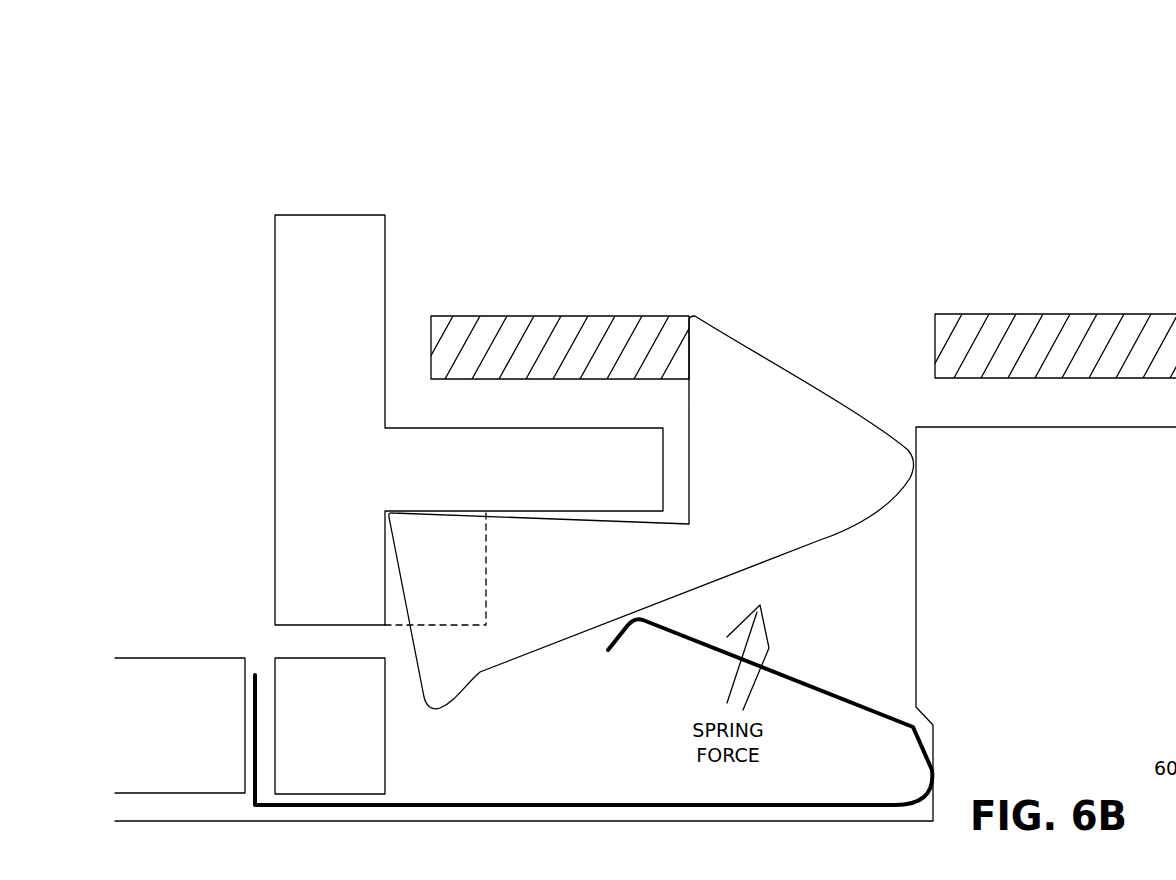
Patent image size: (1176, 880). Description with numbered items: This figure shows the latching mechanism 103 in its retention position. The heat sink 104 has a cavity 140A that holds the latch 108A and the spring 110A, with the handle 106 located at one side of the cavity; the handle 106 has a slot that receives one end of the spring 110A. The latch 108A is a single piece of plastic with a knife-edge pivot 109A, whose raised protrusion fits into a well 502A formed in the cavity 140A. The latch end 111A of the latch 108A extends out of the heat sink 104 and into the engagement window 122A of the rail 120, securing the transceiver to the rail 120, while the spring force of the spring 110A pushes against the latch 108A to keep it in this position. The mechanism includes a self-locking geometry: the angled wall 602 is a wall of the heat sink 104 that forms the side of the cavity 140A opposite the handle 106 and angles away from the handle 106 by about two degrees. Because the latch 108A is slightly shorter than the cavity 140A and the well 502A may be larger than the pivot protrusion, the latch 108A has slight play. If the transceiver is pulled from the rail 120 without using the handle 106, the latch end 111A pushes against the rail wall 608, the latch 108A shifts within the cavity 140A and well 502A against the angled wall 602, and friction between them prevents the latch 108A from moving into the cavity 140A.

The latching mechanism 103 is at (142, 252).
The heat sink 104 is at (1080, 637).
The handle 106 is at (272, 653).
The latch 108A is at (620, 571).
The knife-edge pivot 109A is at (393, 513).
The spring 110A is at (578, 790).
The latch end 111A is at (723, 404).
The rail 120 is at (1063, 302).
The engagement window 122A is at (851, 262).
The cavity 140A is at (897, 596).
The well 502A is at (395, 573).
The angled wall 602 is at (936, 470).
The rail wall 608 is at (690, 336).